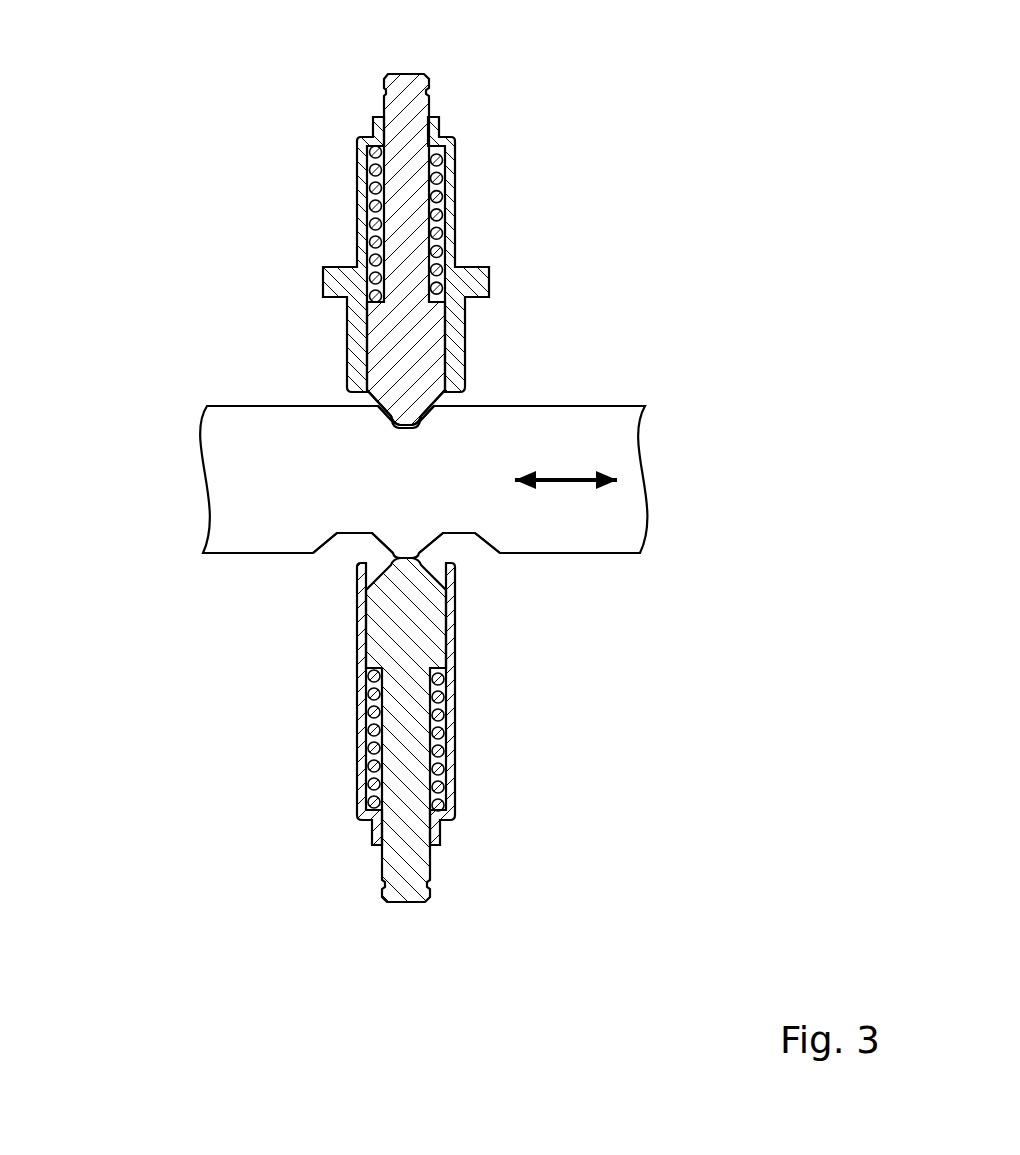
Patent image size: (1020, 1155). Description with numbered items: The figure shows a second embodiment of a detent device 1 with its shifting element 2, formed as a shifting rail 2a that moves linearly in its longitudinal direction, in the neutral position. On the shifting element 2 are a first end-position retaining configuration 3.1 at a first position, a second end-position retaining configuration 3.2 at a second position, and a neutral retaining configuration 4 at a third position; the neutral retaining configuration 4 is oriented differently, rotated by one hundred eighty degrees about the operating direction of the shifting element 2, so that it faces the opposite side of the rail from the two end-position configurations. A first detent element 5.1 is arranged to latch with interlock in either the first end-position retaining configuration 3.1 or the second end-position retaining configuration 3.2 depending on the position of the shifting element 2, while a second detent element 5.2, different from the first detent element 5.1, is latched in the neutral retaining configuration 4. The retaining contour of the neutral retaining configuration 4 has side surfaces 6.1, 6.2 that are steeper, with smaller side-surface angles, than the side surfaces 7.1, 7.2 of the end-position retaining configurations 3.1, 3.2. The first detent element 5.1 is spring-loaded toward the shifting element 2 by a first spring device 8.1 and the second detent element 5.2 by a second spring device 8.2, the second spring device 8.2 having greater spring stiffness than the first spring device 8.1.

The detent device 1 is at (637, 152).
The shifting element 2 is at (602, 518).
The shifting rail 2a is at (423, 482).
The first end-position retaining configuration 3.1 is at (349, 547).
The second end-position retaining configuration 3.2 is at (460, 543).
The neutral retaining configuration 4 is at (403, 425).
The first detent element 5.1 is at (400, 633).
The second detent element 5.2 is at (410, 263).
The side surface 6.1 is at (394, 416).
The side surface 6.2 is at (430, 420).
The side surface 7.1 is at (325, 546).
The side surface 7.2 is at (385, 535).
The first spring device 8.1 is at (448, 750).
The second spring device 8.2 is at (365, 170).